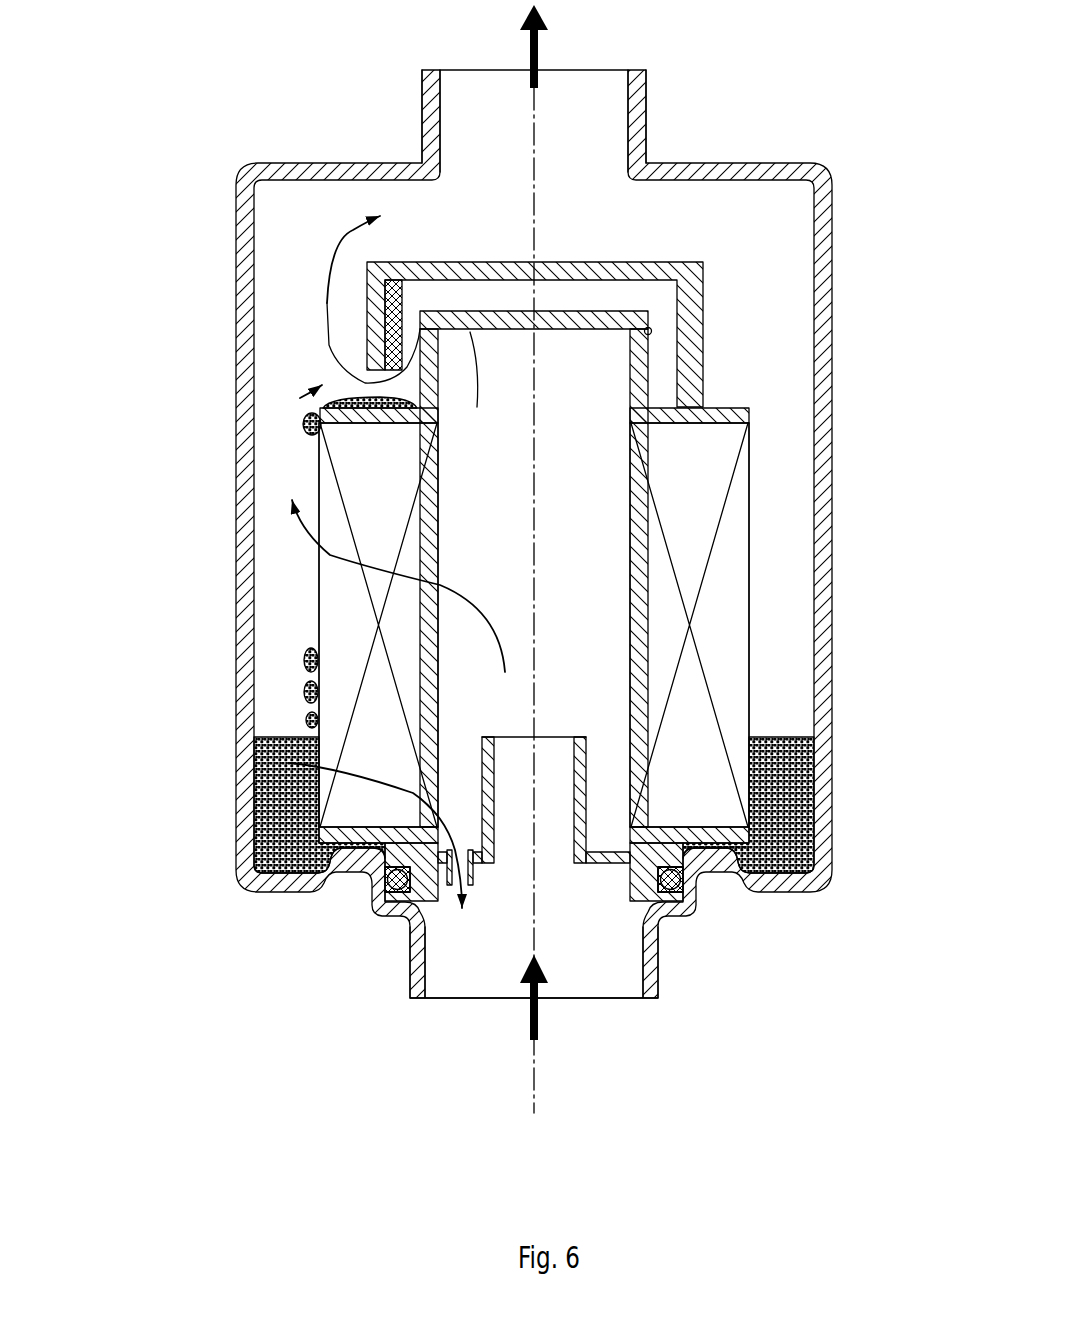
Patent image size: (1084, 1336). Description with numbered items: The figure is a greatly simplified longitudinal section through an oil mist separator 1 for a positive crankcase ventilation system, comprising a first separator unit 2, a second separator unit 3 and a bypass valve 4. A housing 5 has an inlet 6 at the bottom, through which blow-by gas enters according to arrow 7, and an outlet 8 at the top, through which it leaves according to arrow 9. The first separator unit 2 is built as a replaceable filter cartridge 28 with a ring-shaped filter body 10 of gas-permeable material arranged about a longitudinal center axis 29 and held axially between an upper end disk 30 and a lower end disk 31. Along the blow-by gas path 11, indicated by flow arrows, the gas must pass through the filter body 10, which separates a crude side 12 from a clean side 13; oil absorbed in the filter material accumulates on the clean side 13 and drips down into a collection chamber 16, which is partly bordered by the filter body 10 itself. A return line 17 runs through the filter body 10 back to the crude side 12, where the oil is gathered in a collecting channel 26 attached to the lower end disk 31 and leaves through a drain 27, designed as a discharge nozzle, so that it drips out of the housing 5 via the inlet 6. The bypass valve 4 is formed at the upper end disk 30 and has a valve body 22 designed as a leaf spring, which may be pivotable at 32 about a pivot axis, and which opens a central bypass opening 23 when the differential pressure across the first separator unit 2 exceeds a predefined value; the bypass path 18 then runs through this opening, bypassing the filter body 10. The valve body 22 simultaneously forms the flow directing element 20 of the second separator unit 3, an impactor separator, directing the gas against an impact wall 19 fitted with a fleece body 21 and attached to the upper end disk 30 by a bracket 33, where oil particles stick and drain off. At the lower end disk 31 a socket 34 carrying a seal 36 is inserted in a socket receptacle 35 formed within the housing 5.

The oil mist separator 1 is at (517, 499).
The first separator unit 2 is at (204, 560).
The second separator unit 3 is at (240, 424).
The bypass valve 4 is at (667, 204).
The housing 5 is at (586, 534).
The inlet 6 is at (534, 1019).
The arrow 7 is at (559, 1041).
The outlet 8 is at (534, 86).
The arrow 9 is at (586, 44).
The filter body 10 is at (612, 625).
The blow-by gas path 11 is at (247, 625).
The crude side 12 is at (534, 578).
The clean side 13 is at (771, 625).
The collection chamber 16 is at (465, 805).
The return line 17 is at (387, 960).
The bypass path 18 is at (278, 242).
The impact wall 19 is at (284, 315).
The flow directing element 20 is at (408, 233).
The fleece body 21 is at (294, 343).
The valve body 22 is at (481, 206).
The bypass opening 23 is at (531, 395).
The collecting channel 26 is at (550, 800).
The drain 27 is at (474, 959).
The filter cartridge 28 is at (244, 687).
The longitudinal center axis 29 is at (478, 626).
The upper end disk 30 is at (604, 400).
The lower end disk 31 is at (619, 853).
The pivot axis 32 is at (775, 302).
The bracket 33 is at (636, 302).
The socket 34 is at (536, 971).
The socket receptacle 35 is at (607, 943).
The seal 36 is at (558, 961).